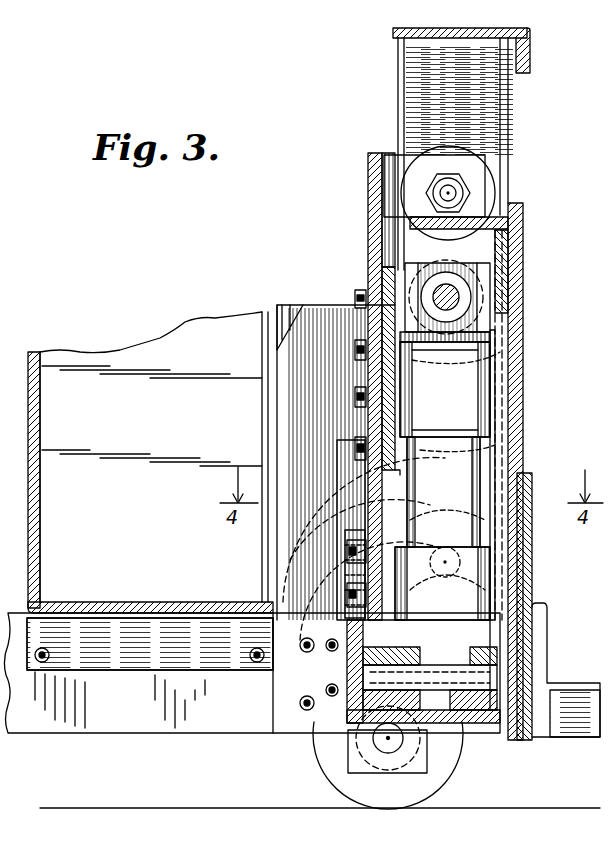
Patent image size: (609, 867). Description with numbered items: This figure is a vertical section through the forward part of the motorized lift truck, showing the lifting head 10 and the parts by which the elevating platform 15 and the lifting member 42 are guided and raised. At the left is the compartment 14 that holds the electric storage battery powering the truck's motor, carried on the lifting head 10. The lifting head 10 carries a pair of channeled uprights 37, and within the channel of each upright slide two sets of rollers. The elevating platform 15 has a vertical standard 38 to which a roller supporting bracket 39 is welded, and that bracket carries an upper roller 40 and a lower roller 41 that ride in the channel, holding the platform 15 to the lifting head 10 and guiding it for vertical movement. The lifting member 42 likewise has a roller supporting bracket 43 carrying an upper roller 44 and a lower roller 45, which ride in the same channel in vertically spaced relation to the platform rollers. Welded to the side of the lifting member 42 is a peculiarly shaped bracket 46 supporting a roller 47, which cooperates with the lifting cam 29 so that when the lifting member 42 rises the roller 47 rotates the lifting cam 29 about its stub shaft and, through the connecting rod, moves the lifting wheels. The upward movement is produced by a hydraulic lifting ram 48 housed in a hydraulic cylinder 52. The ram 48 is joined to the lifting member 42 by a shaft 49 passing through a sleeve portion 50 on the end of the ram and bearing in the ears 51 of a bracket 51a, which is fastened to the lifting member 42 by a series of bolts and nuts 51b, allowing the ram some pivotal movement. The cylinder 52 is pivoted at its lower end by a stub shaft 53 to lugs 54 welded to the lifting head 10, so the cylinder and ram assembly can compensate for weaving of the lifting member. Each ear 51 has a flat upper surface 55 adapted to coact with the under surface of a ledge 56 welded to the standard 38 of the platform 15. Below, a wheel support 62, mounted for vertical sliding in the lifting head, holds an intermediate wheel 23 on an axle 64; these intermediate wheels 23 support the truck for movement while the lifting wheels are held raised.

The lifting head 10 is at (155, 735).
The battery compartment 14 is at (162, 412).
The elevating platform 15 is at (533, 389).
The intermediate wheel 23 is at (340, 780).
The lifting cam 29 is at (305, 500).
The channeled upright 37 is at (412, 76).
The vertical standard 38 is at (517, 435).
The roller supporting bracket 39 is at (430, 383).
The upper roller 40 is at (516, 320).
The lower roller 41 is at (540, 618).
The lifting member 42 is at (360, 194).
The roller supporting bracket 43 is at (410, 232).
The upper roller 44 is at (430, 152).
The lower roller 45 is at (510, 522).
The bracket 46 is at (315, 622).
The roller 47 is at (340, 570).
The lifting ram 48 is at (470, 333).
The shaft 49 is at (478, 272).
The sleeve portion 50 is at (470, 305).
The ear 51 is at (490, 270).
The bracket 51a is at (364, 282).
The bolts and nuts 51b is at (358, 385).
The hydraulic cylinder 52 is at (462, 420).
The stub shaft 53 is at (520, 662).
The lug 54 is at (328, 655).
The flat upper surface 55 is at (508, 245).
The ledge 56 is at (480, 205).
The wheel support 62 is at (352, 750).
The axle 64 is at (356, 768).